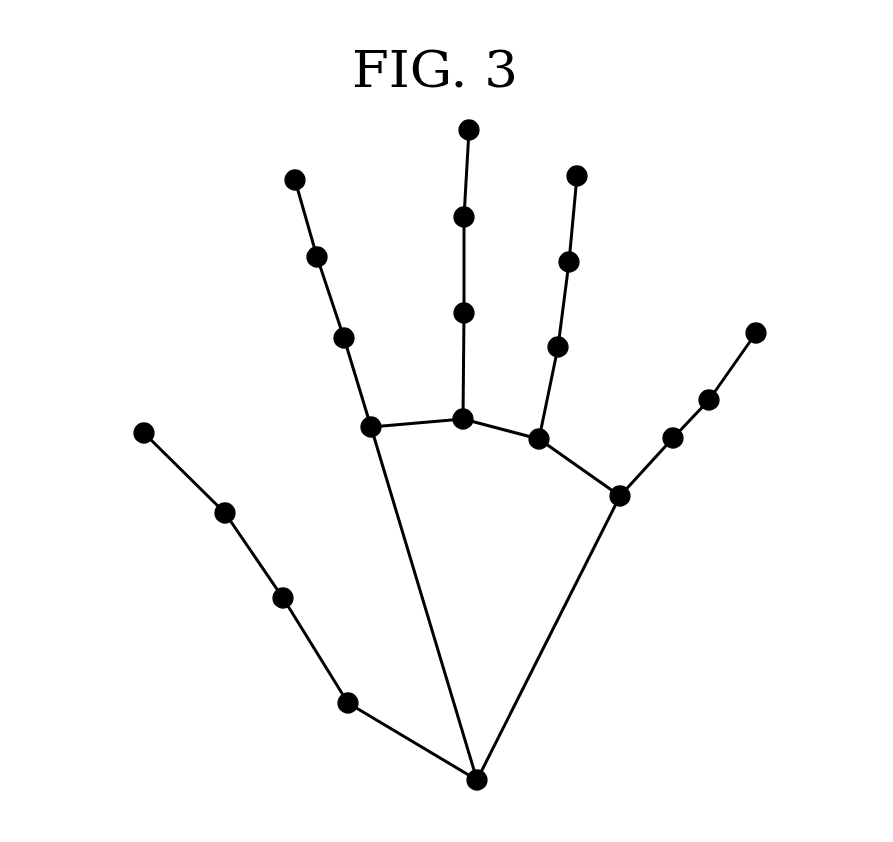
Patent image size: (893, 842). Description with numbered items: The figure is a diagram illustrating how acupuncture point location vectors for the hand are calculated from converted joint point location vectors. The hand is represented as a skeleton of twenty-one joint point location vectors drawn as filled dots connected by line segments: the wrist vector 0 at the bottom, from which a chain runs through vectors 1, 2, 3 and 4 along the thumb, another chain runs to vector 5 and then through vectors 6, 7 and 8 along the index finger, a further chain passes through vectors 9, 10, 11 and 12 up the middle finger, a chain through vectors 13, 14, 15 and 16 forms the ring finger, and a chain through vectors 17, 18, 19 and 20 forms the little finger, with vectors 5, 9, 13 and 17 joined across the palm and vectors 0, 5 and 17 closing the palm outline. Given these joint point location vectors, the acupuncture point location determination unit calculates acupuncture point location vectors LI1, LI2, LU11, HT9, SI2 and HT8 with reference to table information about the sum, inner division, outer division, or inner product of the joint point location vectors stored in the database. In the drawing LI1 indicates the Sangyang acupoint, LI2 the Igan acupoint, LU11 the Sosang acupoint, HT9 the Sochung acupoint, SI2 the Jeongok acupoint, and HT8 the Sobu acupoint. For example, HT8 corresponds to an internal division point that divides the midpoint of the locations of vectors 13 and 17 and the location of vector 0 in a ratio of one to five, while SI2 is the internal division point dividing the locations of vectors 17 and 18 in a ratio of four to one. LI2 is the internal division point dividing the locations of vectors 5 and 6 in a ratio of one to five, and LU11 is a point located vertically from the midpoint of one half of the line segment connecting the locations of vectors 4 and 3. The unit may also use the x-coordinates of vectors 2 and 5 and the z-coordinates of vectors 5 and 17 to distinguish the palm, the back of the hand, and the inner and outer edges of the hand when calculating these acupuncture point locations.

The joint point location vector 0 is at (490, 779).
The joint point location vector 1 is at (398, 736).
The joint point location vector 2 is at (298, 645).
The joint point location vector 3 is at (238, 550).
The joint point location vector 4 is at (133, 443).
The joint point location vector 5 is at (407, 598).
The joint point location vector 6 is at (332, 343).
The joint point location vector 7 is at (313, 292).
The joint point location vector 8 is at (283, 190).
The joint point location vector 9 is at (422, 435).
The joint point location vector 10 is at (445, 360).
The joint point location vector 11 is at (445, 258).
The joint point location vector 12 is at (449, 167).
The joint point location vector 13 is at (506, 453).
The joint point location vector 14 is at (575, 387).
The joint point location vector 15 is at (591, 299).
The joint point location vector 16 is at (598, 213).
The joint point location vector 17 is at (603, 484).
The joint point location vector 18 is at (694, 450).
The joint point location vector 19 is at (717, 413).
The joint point location vector 20 is at (775, 336).
The acupuncture point location vector LI1 is at (286, 226).
The acupuncture point location vector LI2 is at (356, 384).
The acupuncture point location vector LU11 is at (159, 489).
The acupuncture point location vector HT9 is at (717, 348).
The acupuncture point location vector HT8 is at (566, 497).
The acupuncture point location vector SI2 is at (650, 466).